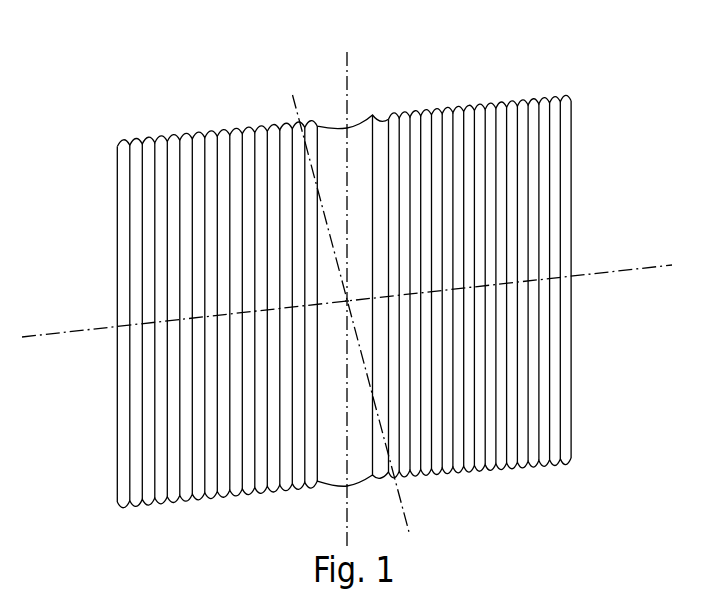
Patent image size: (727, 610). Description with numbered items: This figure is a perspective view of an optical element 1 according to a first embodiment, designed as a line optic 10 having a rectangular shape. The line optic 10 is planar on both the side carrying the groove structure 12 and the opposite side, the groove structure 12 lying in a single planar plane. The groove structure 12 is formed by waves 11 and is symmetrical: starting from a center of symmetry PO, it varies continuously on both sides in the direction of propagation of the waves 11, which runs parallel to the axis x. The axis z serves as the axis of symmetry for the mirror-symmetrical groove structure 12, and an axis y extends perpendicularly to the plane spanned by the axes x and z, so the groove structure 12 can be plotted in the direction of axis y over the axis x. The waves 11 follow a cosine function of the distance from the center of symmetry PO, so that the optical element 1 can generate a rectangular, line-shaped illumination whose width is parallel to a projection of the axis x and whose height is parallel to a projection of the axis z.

The optical element 1 is at (387, 262).
The line optic 10 is at (397, 259).
The waves 11 is at (438, 110).
The groove structure 12 is at (503, 241).
The center of symmetry PO is at (347, 301).
The axis x is at (73, 330).
The axis y is at (293, 110).
The axis z is at (347, 73).